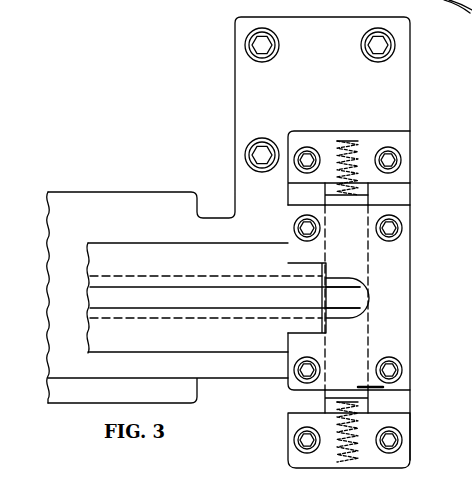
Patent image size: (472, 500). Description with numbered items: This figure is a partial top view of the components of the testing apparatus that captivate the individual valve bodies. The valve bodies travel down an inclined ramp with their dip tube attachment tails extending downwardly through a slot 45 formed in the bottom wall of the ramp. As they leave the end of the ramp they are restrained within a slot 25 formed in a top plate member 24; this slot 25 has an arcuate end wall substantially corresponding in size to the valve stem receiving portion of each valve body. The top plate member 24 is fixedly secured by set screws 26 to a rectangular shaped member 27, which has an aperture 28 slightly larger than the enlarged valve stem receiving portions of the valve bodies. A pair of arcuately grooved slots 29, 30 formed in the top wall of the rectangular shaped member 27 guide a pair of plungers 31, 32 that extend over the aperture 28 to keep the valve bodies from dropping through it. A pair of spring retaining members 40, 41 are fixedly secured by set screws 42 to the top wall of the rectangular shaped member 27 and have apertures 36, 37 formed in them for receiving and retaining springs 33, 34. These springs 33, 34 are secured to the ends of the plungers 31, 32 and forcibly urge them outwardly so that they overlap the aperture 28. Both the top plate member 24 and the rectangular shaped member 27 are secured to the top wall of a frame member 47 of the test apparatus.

The frame member 47 is at (385, 78).
The spring retaining member 41 is at (384, 137).
The set screws 42 is at (303, 157).
The aperture 36 is at (347, 142).
The spring 34 is at (352, 143).
The arcuately grooved slot 29 is at (325, 191).
The rectangular shaped member 27 is at (390, 196).
The top plate member 24 is at (392, 256).
The set screws 26 is at (295, 228).
The slot 45 is at (137, 300).
The plunger 32 is at (345, 250).
The slot 25 is at (364, 306).
The aperture 28 is at (348, 302).
The plunger 31 is at (352, 380).
The arcuately grooved slot 30 is at (363, 408).
The spring 33 is at (360, 421).
The spring retaining member 40 is at (403, 455).
The aperture 37 is at (354, 462).